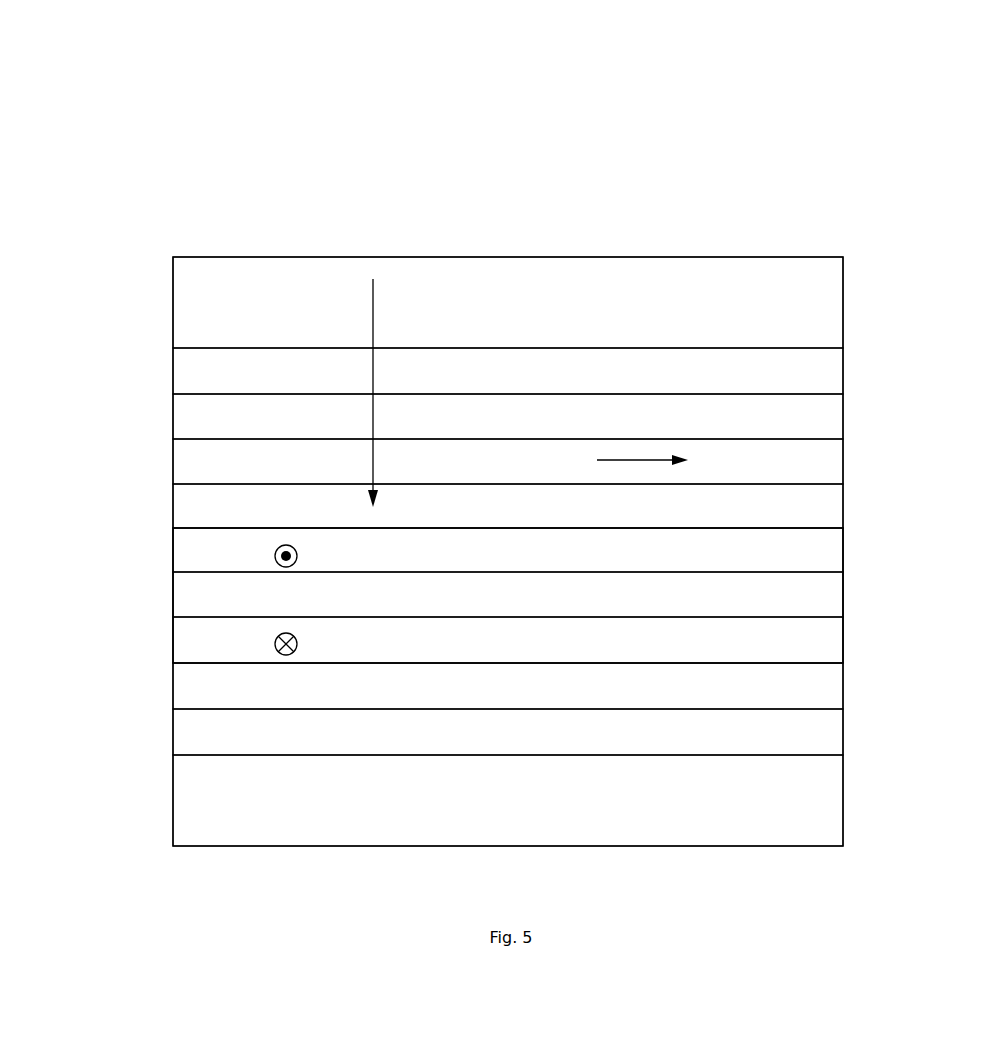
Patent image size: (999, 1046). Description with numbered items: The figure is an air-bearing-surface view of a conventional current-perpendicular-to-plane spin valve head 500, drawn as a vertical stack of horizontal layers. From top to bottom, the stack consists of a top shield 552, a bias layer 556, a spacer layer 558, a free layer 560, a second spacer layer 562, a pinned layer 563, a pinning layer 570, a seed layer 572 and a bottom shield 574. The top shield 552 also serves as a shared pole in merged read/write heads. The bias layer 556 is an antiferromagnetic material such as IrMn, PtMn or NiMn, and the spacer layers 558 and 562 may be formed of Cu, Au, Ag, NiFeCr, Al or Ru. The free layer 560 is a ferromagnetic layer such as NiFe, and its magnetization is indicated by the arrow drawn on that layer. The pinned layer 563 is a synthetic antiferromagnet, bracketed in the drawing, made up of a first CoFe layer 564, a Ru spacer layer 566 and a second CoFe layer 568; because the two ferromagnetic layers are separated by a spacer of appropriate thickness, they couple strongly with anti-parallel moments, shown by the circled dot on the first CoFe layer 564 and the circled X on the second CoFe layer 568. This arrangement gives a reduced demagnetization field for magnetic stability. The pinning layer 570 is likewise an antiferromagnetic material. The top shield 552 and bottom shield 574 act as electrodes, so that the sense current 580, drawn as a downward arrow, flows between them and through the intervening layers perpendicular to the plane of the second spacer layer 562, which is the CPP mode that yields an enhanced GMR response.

The spin valve head 500 is at (152, 169).
The top shield 552 is at (844, 320).
The bias layer 556 is at (844, 380).
The spacer layer 558 is at (844, 413).
The free layer 560 is at (844, 458).
The second spacer layer 562 is at (844, 503).
The pinned layer 563 is at (867, 663).
The first CoFe layer 564 is at (508, 550).
The Ru spacer layer 566 is at (508, 594).
The second CoFe layer 568 is at (508, 640).
The pinning layer 570 is at (847, 684).
The seed layer 572 is at (847, 740).
The bottom shield 574 is at (847, 787).
The sense current 580 is at (373, 322).